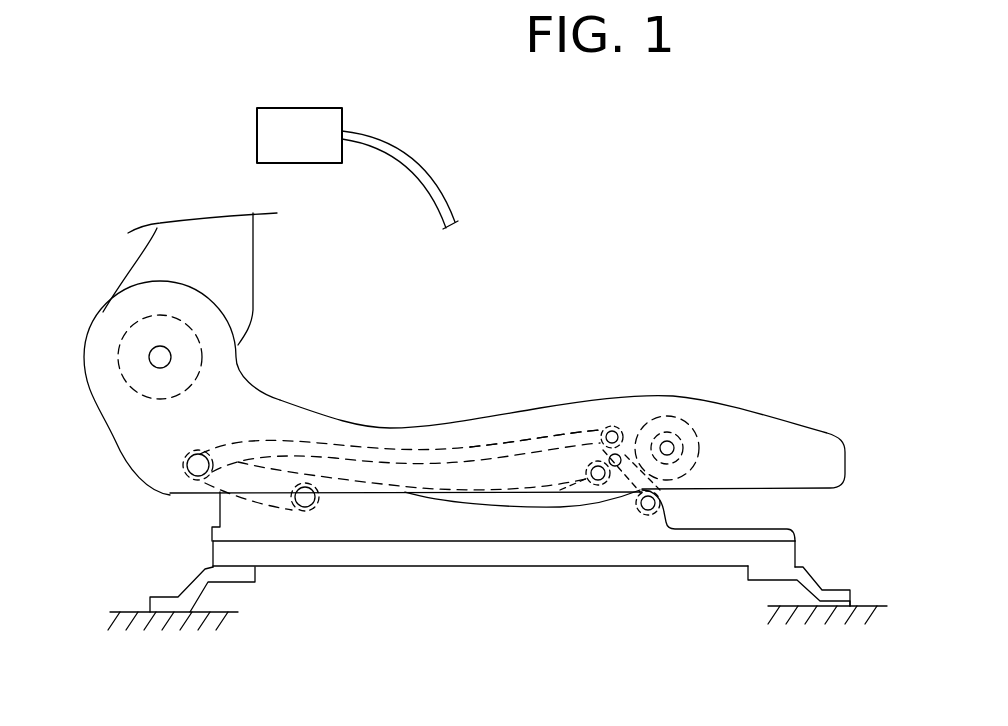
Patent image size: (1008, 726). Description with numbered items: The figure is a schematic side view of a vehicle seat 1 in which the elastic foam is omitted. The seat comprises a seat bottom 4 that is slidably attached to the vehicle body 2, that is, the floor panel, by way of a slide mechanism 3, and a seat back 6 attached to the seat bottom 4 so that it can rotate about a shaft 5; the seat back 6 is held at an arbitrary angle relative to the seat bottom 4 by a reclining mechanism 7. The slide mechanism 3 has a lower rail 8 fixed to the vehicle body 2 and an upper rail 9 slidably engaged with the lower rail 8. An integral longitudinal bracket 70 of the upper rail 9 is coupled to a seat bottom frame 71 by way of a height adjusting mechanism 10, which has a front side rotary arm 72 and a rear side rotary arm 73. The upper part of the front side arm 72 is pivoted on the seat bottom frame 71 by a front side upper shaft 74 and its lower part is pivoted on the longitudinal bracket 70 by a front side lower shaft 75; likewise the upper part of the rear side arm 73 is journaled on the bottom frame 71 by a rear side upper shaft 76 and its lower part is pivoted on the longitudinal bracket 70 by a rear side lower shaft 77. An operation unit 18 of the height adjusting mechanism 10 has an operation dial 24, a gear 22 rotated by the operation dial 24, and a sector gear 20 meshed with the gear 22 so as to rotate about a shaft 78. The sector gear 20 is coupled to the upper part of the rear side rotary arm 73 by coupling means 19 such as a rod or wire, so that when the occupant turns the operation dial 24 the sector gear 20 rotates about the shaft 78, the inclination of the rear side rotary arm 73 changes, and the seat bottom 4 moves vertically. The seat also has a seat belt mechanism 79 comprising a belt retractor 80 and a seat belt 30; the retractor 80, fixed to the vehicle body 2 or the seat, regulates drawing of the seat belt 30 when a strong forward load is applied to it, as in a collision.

The vehicle seat 1 is at (446, 377).
The vehicle body 2 is at (200, 623).
The slide mechanism 3 is at (500, 583).
The seat bottom 4 is at (790, 428).
The shaft 5 is at (157, 353).
The seat back 6 is at (252, 237).
The reclining mechanism 7 is at (205, 356).
The lower rail 8 is at (668, 555).
The upper rail 9 is at (384, 523).
The longitudinal bracket 70 is at (500, 598).
The height adjusting mechanism 10 is at (722, 411).
The operation unit 18 is at (672, 420).
The coupling means 19 is at (500, 440).
The sector gear 20 is at (648, 446).
The gear 22 is at (697, 442).
The operation dial 24 is at (698, 457).
The seat belt 30 is at (416, 159).
The seat bottom frame 71 is at (412, 428).
The front side rotary arm 72 is at (613, 487).
The rear side rotary arm 73 is at (207, 485).
The front side upper shaft 74 is at (590, 476).
The front side lower shaft 75 is at (647, 513).
The rear side upper shaft 76 is at (188, 465).
The rear side lower shaft 77 is at (305, 507).
The shaft 78 is at (606, 437).
The seat belt mechanism 79 is at (383, 145).
The belt retractor 80 is at (265, 133).